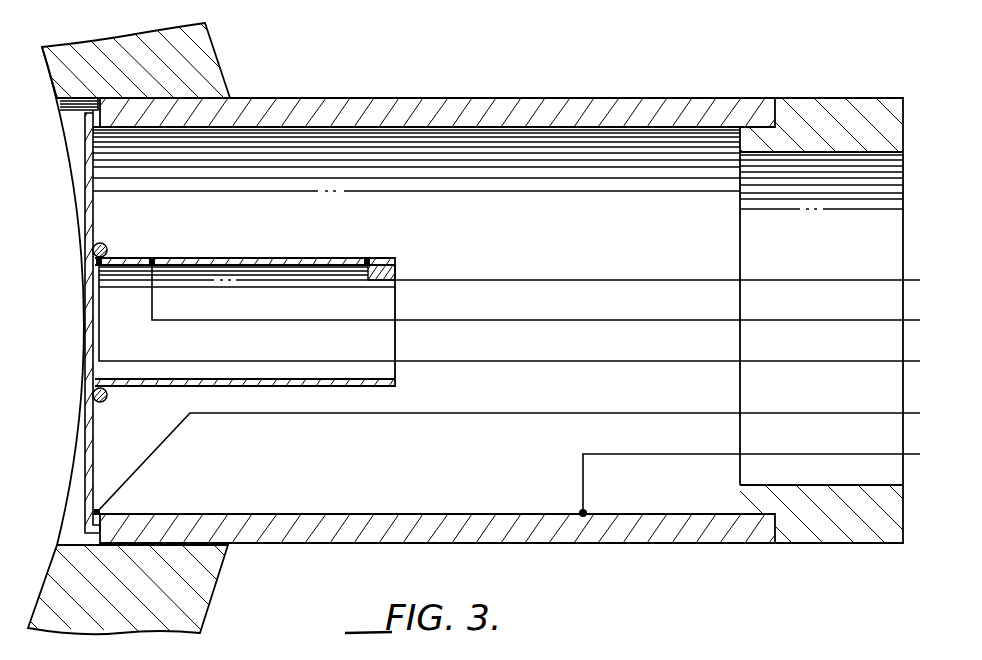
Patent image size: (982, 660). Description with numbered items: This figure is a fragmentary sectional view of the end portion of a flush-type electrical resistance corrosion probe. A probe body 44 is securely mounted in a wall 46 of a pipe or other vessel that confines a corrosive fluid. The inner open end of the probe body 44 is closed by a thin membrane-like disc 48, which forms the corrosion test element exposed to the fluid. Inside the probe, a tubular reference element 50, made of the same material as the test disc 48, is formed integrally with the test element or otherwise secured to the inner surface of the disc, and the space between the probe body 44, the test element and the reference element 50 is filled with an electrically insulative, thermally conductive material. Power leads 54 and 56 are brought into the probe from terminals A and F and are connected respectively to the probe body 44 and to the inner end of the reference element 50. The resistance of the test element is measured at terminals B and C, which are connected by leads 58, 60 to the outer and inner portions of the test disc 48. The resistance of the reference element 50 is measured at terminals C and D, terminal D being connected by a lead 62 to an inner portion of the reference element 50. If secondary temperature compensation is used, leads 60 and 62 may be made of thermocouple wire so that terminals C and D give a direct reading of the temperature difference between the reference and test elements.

The probe body 44 is at (423, 97).
The wall 46 is at (213, 68).
The disc 48 is at (88, 190).
The tubular reference element 50 is at (262, 258).
The power lead 54 is at (807, 452).
The power lead 56 is at (815, 278).
The lead 58 is at (808, 411).
The lead 60 is at (807, 359).
The lead 62 is at (807, 318).